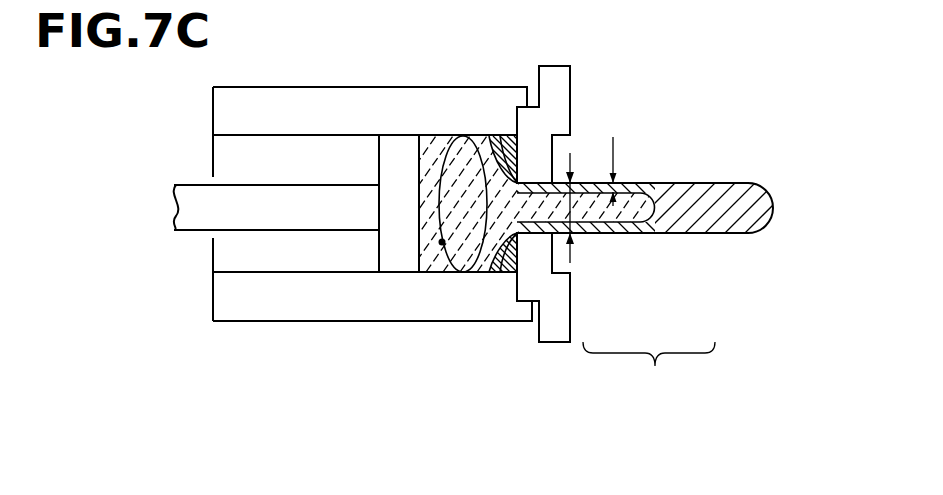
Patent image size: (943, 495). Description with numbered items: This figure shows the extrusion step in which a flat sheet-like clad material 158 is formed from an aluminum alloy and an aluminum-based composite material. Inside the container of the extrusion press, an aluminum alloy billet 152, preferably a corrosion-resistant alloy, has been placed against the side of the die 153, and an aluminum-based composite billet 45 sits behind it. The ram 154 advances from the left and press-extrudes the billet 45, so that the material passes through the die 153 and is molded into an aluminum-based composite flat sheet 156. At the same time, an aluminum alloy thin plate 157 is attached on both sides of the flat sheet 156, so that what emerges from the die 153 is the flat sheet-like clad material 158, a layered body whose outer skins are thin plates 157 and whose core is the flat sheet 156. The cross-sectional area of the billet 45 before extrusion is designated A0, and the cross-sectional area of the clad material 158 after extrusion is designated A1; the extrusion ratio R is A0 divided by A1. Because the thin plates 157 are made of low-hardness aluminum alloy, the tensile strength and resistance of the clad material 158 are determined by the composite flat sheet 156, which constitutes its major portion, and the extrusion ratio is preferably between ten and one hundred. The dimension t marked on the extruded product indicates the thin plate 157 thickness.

The aluminum alloy billet 152 is at (500, 136).
The die 153 is at (540, 135).
The ram 154 is at (192, 190).
The aluminum-based composite billet 45 is at (436, 140).
The aluminum-based composite flat sheet 156 is at (577, 194).
The aluminum alloy thin plate 157 is at (625, 235).
The flat sheet-like clad material 158 is at (649, 378).
The cross-sectional area of the clad material after extrusion A1 is at (591, 183).
The tube wall thickness t is at (623, 170).
The cross-sectional area of the billet before extrusion A0 is at (442, 242).